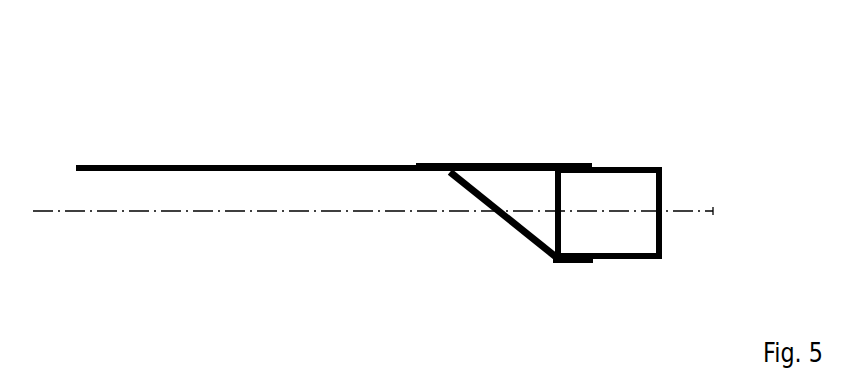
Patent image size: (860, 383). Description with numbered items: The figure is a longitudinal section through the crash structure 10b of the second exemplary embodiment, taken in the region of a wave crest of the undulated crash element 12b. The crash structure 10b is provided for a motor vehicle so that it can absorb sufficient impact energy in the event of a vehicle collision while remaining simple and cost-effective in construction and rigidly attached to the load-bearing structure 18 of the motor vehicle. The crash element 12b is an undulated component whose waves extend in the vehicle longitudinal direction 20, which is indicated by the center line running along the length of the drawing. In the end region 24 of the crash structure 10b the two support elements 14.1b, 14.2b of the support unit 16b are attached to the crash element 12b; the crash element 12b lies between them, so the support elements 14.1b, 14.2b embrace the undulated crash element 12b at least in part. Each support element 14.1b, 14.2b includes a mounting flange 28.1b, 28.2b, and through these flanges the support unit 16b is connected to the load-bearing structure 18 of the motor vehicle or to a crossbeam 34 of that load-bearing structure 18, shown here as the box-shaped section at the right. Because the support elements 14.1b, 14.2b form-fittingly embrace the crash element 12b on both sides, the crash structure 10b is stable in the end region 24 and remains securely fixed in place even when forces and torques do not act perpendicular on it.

The crash structure 10b is at (591, 195).
The crash element 12b is at (286, 164).
The support element 14.1b is at (504, 221).
The support element 14.2b is at (471, 163).
The support unit 16b is at (517, 214).
The load-bearing structure 18 is at (672, 216).
The crossbeam 34 is at (662, 228).
The vehicle longitudinal direction 20 is at (712, 211).
The end region 24 is at (425, 160).
The mounting flange 28.1b is at (578, 264).
The mounting flange 28.2b is at (575, 163).